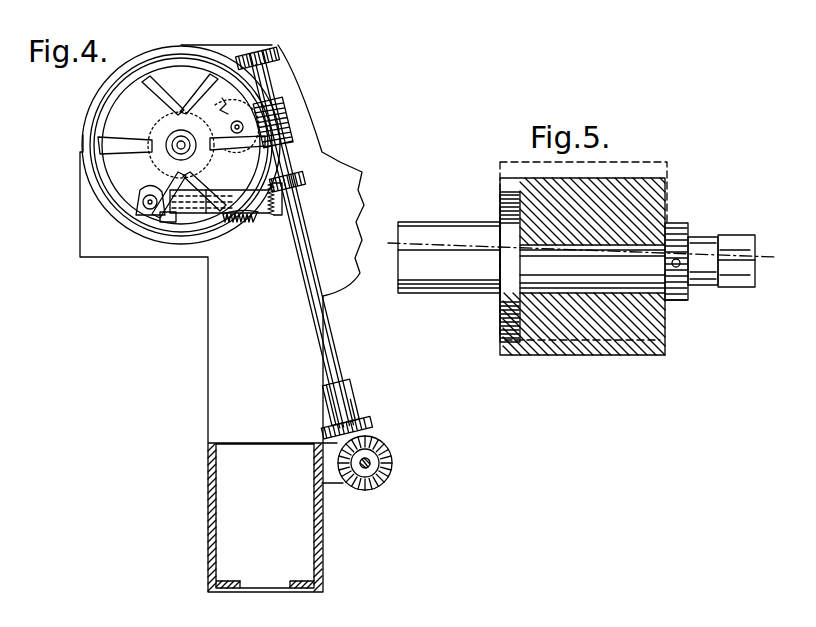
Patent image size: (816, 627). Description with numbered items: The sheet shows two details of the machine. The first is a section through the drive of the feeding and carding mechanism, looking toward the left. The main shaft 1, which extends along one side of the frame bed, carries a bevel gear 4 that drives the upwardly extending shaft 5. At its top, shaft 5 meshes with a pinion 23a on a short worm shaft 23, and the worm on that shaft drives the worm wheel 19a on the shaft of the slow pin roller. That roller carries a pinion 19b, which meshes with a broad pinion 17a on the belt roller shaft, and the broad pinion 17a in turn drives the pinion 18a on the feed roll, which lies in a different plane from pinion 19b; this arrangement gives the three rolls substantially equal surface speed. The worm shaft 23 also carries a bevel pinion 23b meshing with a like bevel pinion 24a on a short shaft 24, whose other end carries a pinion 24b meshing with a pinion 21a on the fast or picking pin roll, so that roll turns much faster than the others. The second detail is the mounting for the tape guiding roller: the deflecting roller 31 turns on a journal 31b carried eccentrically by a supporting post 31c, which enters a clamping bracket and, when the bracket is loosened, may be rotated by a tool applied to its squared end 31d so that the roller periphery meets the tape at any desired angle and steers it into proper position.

In FIG. 4, the worm wheel 19a is at (178, 63).
In FIG. 4, the pinion 19b is at (180, 113).
In FIG. 4, the pinion 18a is at (227, 110).
In FIG. 4, the pinion 21a is at (137, 197).
In FIG. 4, the short shaft 24 is at (192, 202).
In FIG. 4, the pinion 24b is at (165, 216).
In FIG. 4, the broad pinion 17a is at (237, 224).
In FIG. 4, the bevel pinion 24a is at (273, 218).
In FIG. 4, the upwardly extending shaft 5 is at (312, 233).
In FIG. 4, the pinion 23a is at (268, 50).
In FIG. 4, the short worm shaft 23 is at (284, 112).
In FIG. 4, the bevel pinion 23b is at (303, 181).
In FIG. 4, the bevel gear 4 is at (383, 437).
In FIG. 4, the main shaft 1 is at (376, 463).
In FIG. 5, the deflecting roller 31 is at (627, 353).
In FIG. 5, the journal 31b is at (572, 265).
In FIG. 5, the supporting post 31c is at (455, 288).
In FIG. 5, the squared end 31d is at (735, 283).